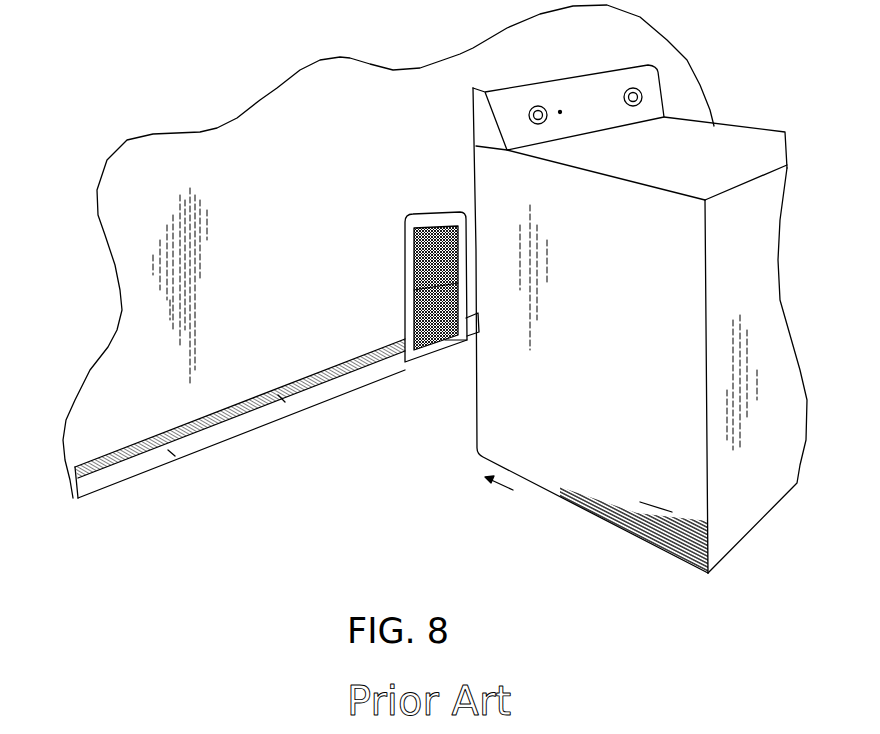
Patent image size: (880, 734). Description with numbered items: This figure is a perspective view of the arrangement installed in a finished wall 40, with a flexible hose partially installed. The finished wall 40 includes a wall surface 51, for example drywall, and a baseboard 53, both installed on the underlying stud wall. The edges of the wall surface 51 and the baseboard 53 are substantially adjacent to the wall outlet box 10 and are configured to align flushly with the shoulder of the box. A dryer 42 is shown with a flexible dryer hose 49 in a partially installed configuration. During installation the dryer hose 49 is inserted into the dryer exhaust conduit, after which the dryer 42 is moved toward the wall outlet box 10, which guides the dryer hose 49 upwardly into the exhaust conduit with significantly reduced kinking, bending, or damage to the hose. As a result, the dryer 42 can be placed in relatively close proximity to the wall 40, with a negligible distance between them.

The finished wall 40 is at (113, 296).
The wall surface 51 is at (298, 191).
The baseboard 53 is at (310, 402).
The wall outlet box 10 is at (405, 366).
The flexible dryer hose 49 is at (462, 357).
The dryer 42 is at (625, 493).